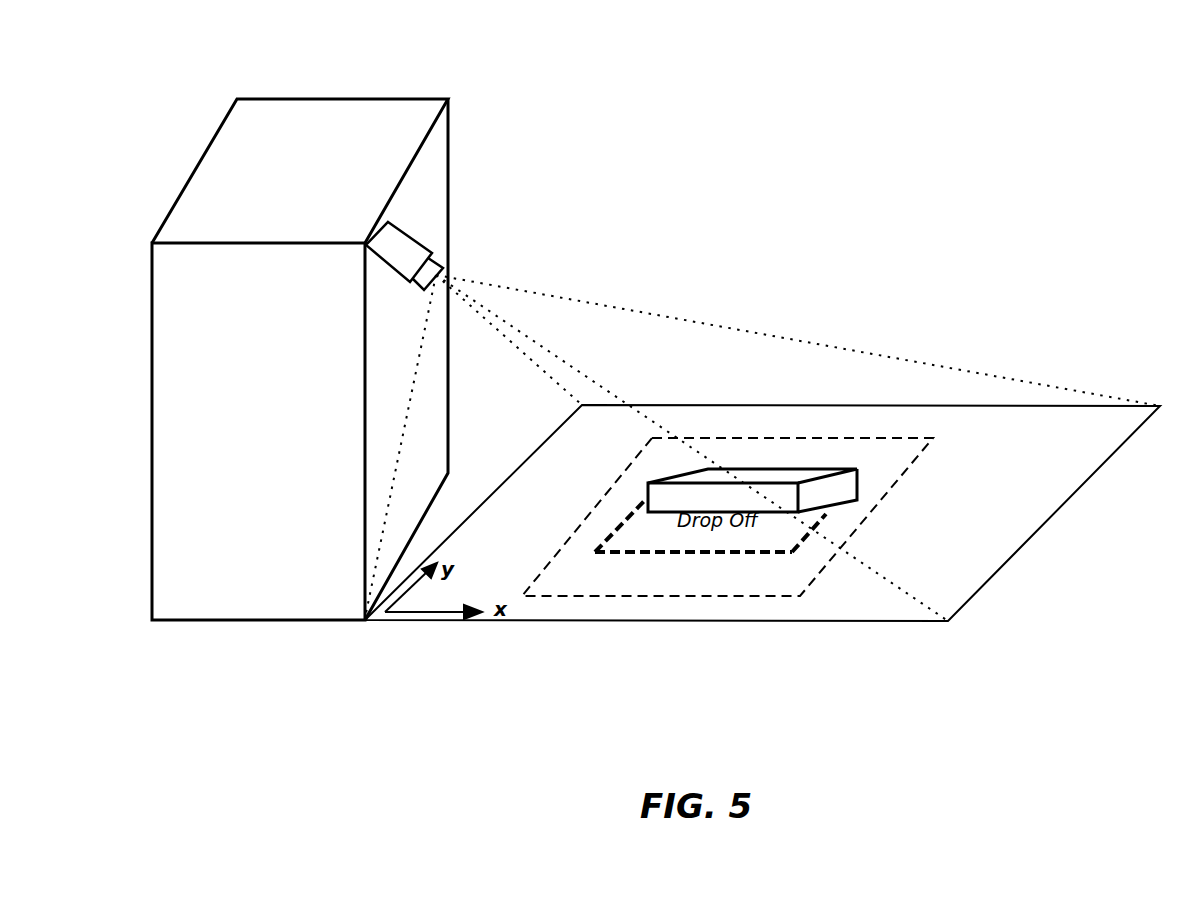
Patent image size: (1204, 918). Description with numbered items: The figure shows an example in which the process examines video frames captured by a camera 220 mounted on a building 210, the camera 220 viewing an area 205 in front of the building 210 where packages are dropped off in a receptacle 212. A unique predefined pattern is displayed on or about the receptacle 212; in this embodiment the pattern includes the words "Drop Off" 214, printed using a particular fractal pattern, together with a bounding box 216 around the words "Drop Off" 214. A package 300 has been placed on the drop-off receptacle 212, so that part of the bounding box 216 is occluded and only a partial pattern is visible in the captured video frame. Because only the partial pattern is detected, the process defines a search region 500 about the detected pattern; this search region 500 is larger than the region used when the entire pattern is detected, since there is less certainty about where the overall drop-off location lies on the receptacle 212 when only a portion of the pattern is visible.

The area 205 is at (1077, 493).
The building 210 is at (303, 97).
The camera 220 is at (450, 262).
The package 300 is at (805, 468).
The search region 500 is at (922, 457).
The receptacle 212 is at (635, 537).
The words "Drop Off" 214 is at (712, 533).
The bounding box 216 is at (790, 547).